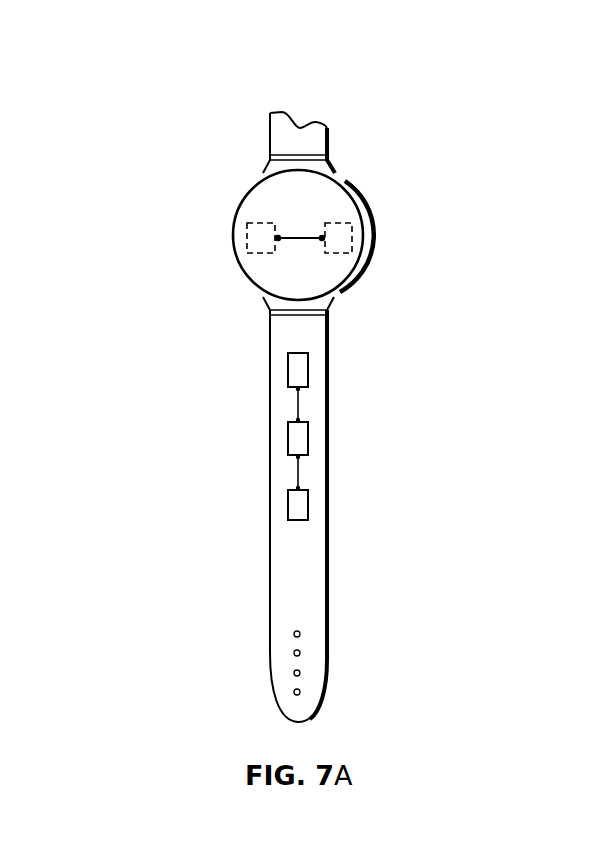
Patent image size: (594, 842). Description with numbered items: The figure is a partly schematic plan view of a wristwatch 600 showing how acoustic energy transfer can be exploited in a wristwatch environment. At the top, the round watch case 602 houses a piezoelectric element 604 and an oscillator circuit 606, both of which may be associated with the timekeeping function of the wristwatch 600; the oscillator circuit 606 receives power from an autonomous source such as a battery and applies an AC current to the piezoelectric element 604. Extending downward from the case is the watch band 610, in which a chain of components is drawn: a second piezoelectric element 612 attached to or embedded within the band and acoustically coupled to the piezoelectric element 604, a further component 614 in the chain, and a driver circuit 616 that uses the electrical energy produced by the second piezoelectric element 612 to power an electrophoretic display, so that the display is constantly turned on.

The wristwatch 600 is at (221, 68).
The watch case 602 is at (341, 182).
The piezoelectric element 604 is at (268, 224).
The oscillator circuit 606 is at (360, 207).
The watch band 610 is at (312, 583).
The second piezoelectric element 612 is at (298, 370).
The second strap component 614 is at (300, 437).
The driver circuit 616 is at (298, 505).